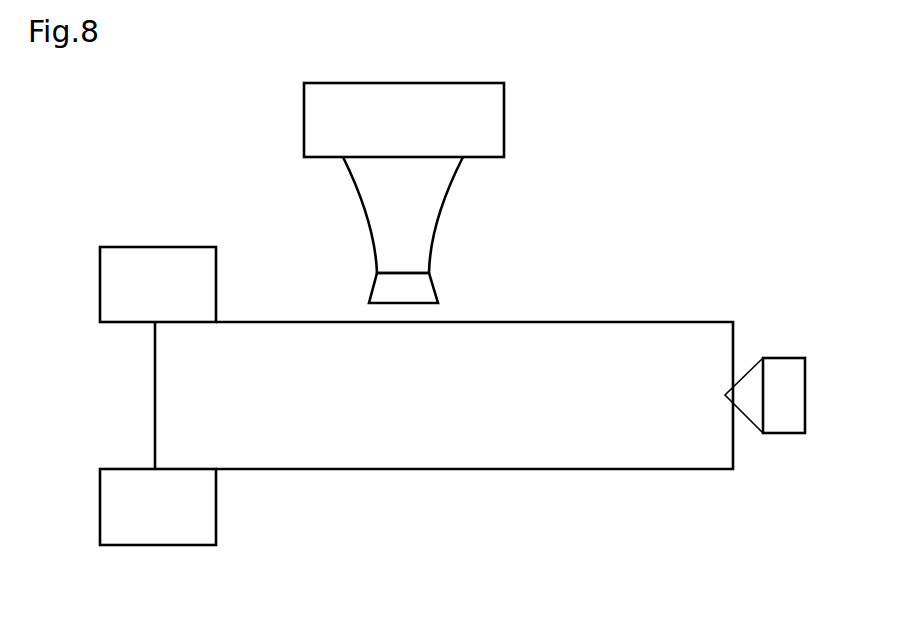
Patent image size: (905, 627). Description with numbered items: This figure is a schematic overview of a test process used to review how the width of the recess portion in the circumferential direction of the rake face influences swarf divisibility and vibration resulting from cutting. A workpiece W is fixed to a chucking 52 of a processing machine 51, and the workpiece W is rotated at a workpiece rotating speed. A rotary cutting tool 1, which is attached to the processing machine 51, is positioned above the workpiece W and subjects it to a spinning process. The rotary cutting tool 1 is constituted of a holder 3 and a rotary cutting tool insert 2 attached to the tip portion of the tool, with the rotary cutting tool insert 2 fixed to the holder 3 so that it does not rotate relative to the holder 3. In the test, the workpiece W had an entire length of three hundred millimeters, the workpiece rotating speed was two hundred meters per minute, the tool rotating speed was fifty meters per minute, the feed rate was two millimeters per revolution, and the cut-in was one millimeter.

The processing machine 51 is at (485, 118).
The chucking 52 is at (158, 262).
The rotary cutting tool 1 is at (445, 230).
The holder 3 is at (428, 210).
The rotary cutting tool insert 2 is at (420, 289).
The workpiece W is at (635, 453).